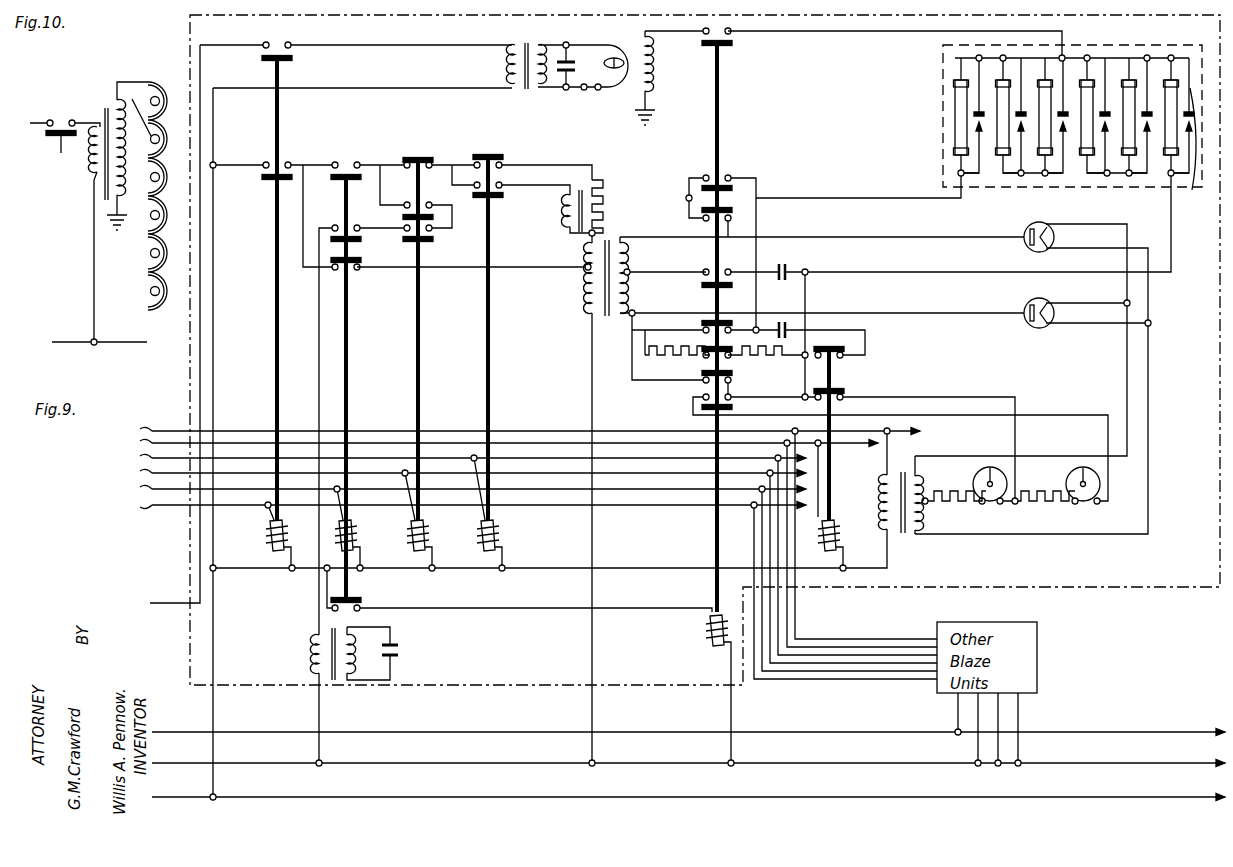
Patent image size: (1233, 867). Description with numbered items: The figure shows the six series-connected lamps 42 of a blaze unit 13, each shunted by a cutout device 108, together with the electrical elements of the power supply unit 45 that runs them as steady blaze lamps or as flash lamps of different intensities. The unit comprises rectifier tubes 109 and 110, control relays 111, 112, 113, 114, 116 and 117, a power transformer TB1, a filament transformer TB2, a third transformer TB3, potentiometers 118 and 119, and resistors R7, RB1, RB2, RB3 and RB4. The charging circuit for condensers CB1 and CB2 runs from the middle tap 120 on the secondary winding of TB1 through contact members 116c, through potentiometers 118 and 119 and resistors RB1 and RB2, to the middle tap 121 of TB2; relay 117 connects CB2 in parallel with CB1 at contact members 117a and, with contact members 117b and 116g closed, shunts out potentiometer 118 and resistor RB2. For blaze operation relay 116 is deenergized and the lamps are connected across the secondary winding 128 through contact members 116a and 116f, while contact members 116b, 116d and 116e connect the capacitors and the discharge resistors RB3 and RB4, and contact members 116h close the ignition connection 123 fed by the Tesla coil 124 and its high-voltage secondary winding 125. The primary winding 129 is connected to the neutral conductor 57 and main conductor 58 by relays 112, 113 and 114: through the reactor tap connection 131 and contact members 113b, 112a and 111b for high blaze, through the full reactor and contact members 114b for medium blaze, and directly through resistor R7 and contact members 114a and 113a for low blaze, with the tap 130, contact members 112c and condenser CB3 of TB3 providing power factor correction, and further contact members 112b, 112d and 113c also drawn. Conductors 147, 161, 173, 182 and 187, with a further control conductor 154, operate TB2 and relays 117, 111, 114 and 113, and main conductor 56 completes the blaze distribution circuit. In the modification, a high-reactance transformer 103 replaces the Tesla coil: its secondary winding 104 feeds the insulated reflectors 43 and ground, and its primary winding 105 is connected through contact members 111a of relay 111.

In FIG. 9, the blaze unit 13 is at (705, 350).
In FIG. 9, the lamp 42 is at (954, 94).
In FIG. 10, the lamp 42 is at (144, 189).
In FIG. 10, the reflector 43 is at (172, 82).
In FIG. 9, the power supply unit 45 is at (1052, 379).
In FIG. 9, the main conductor 56 is at (688, 724).
In FIG. 9, the neutral conductor 57 is at (688, 755).
In FIG. 9, the main conductor 58 is at (688, 789).
In FIG. 10, the main conductor 58 is at (114, 340).
In FIG. 10, the high-voltage high-reactance transformer 103 is at (92, 140).
In FIG. 10, the high-voltage secondary winding 104 is at (120, 185).
In FIG. 10, the low-voltage primary winding 105 is at (87, 172).
In FIG. 9, the cutout device 108 is at (1191, 150).
In FIG. 9, the rectifier tube 109 is at (1043, 226).
In FIG. 9, the rectifier tube 110 is at (1040, 331).
In FIG. 9, the relay 111 is at (278, 393).
In FIG. 9, the contact members 111a is at (279, 38).
In FIG. 10, the contact members 111a is at (56, 113).
In FIG. 9, the contact members 111b is at (282, 164).
In FIG. 9, the control relay 112 is at (349, 391).
In FIG. 9, the contact members 112a is at (343, 164).
In FIG. 9, the relay contact 112b is at (355, 275).
In FIG. 9, the contact members 112c is at (352, 226).
In FIG. 9, the relay contact 112d is at (364, 600).
In FIG. 9, the control relay 113 is at (420, 391).
In FIG. 9, the contact members 113a is at (421, 160).
In FIG. 9, the contact members 113b is at (422, 207).
In FIG. 9, the relay contact 113c is at (429, 237).
In FIG. 9, the control relay 114 is at (490, 391).
In FIG. 9, the contact members 114a is at (490, 158).
In FIG. 9, the contact members 114b is at (500, 182).
In FIG. 9, the main control relay 116 is at (704, 353).
In FIG. 9, the contact members 116a is at (706, 221).
In FIG. 9, the contact members 116b is at (731, 176).
In FIG. 9, the contact members 116c is at (712, 269).
In FIG. 9, the contact members 116d is at (702, 323).
In FIG. 9, the contact members 116e is at (705, 352).
In FIG. 9, the contact members 116f is at (735, 382).
In FIG. 9, the contact members 116g is at (733, 407).
In FIG. 9, the contact members 116h is at (718, 28).
In FIG. 9, the relay 117 is at (832, 457).
In FIG. 9, the contact members 117a is at (845, 345).
In FIG. 9, the contact members 117b is at (843, 392).
In FIG. 9, the potentiometer 118 is at (1081, 515).
In FIG. 9, the potentiometer 119 is at (986, 465).
In FIG. 9, the middle tap 120 is at (632, 272).
In FIG. 9, the middle tap 121 is at (927, 507).
In FIG. 9, the ignition connection 123 is at (882, 31).
In FIG. 9, the Tesla coil 124 is at (567, 54).
In FIG. 9, the high-voltage secondary winding 125 is at (650, 70).
In FIG. 9, the secondary winding 128 is at (628, 293).
In FIG. 9, the primary winding 129 is at (583, 287).
In FIG. 9, the tap 130 is at (585, 268).
In FIG. 9, the tap connection 131 is at (561, 206).
In FIG. 9, the conductor 147 is at (447, 432).
In FIG. 9, the control line 154 is at (431, 492).
In FIG. 9, the conductor 161 is at (443, 446).
In FIG. 9, the conductor 173 is at (427, 509).
In FIG. 9, the conductor 182 is at (439, 461).
In FIG. 9, the conductor 187 is at (435, 477).
In FIG. 9, the resistor R7 is at (604, 208).
In FIG. 9, the resistor RB1 is at (958, 487).
In FIG. 9, the resistor RB2 is at (1045, 487).
In FIG. 9, the discharge resistor RB3 is at (675, 362).
In FIG. 9, the discharge resistor RB4 is at (765, 362).
In FIG. 9, the power transformer TB1 is at (573, 287).
In FIG. 9, the filament transformer TB2 is at (906, 546).
In FIG. 9, the third transformer TB3 is at (309, 652).
In FIG. 9, the condenser CB1 is at (790, 272).
In FIG. 9, the condenser CB2 is at (797, 312).
In FIG. 9, the condenser CB3 is at (400, 657).